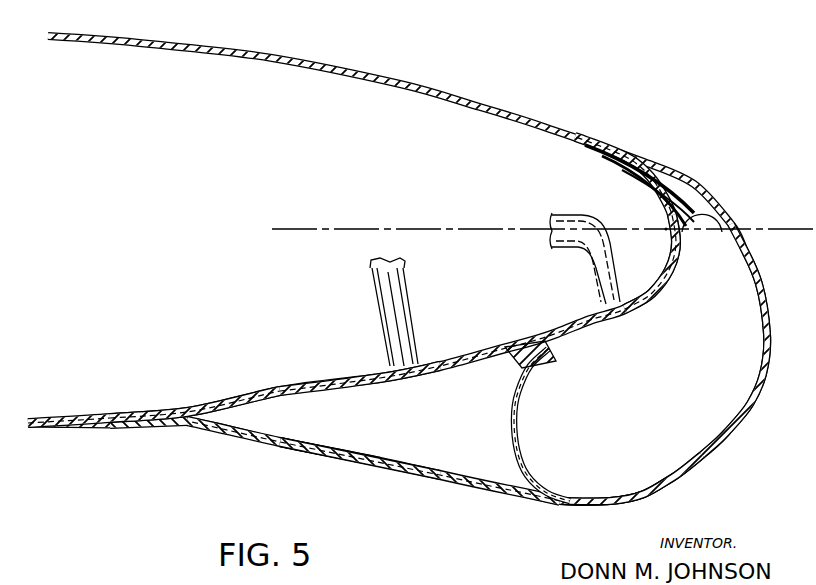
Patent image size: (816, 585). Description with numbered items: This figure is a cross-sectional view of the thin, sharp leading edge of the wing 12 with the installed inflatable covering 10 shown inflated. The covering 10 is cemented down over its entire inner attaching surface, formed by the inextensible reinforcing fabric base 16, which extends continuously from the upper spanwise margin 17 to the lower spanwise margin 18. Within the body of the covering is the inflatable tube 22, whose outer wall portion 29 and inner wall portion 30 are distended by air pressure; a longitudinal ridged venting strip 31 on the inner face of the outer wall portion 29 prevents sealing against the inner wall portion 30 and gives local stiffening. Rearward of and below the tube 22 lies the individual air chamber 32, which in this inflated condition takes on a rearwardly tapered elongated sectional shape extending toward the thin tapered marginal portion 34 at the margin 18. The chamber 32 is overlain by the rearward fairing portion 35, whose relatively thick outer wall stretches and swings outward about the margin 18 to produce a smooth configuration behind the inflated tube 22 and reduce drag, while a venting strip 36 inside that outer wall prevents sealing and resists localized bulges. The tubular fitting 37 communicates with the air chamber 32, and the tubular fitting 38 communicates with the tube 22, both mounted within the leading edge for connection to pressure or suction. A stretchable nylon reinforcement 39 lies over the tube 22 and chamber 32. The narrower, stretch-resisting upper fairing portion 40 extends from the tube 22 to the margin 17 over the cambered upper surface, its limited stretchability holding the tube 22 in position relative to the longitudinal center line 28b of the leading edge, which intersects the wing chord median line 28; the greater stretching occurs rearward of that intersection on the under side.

The inflatable covering 10 is at (654, 165).
The wing 12 is at (403, 84).
The reinforcing base 16 is at (144, 410).
The spanwise margin 17 is at (551, 124).
The spanwise margin 18 is at (62, 427).
The inflatable tube 22 is at (755, 405).
The wing chord median line 28 is at (433, 228).
The longitudinal center line of the leading edge 28b is at (662, 227).
The outer wall portion 29 is at (624, 489).
The inner wall portion 30 is at (664, 287).
The venting strip 31 is at (695, 456).
The air chamber 32 is at (454, 422).
The marginal portion 34 is at (131, 431).
The rearward fairing portion 35 is at (337, 460).
The venting strip 36 is at (353, 446).
The tubular fitting 37 is at (382, 297).
The tubular fitting 38 is at (592, 263).
The reinforcement 39 is at (453, 481).
The upper fairing portion 40 is at (677, 198).